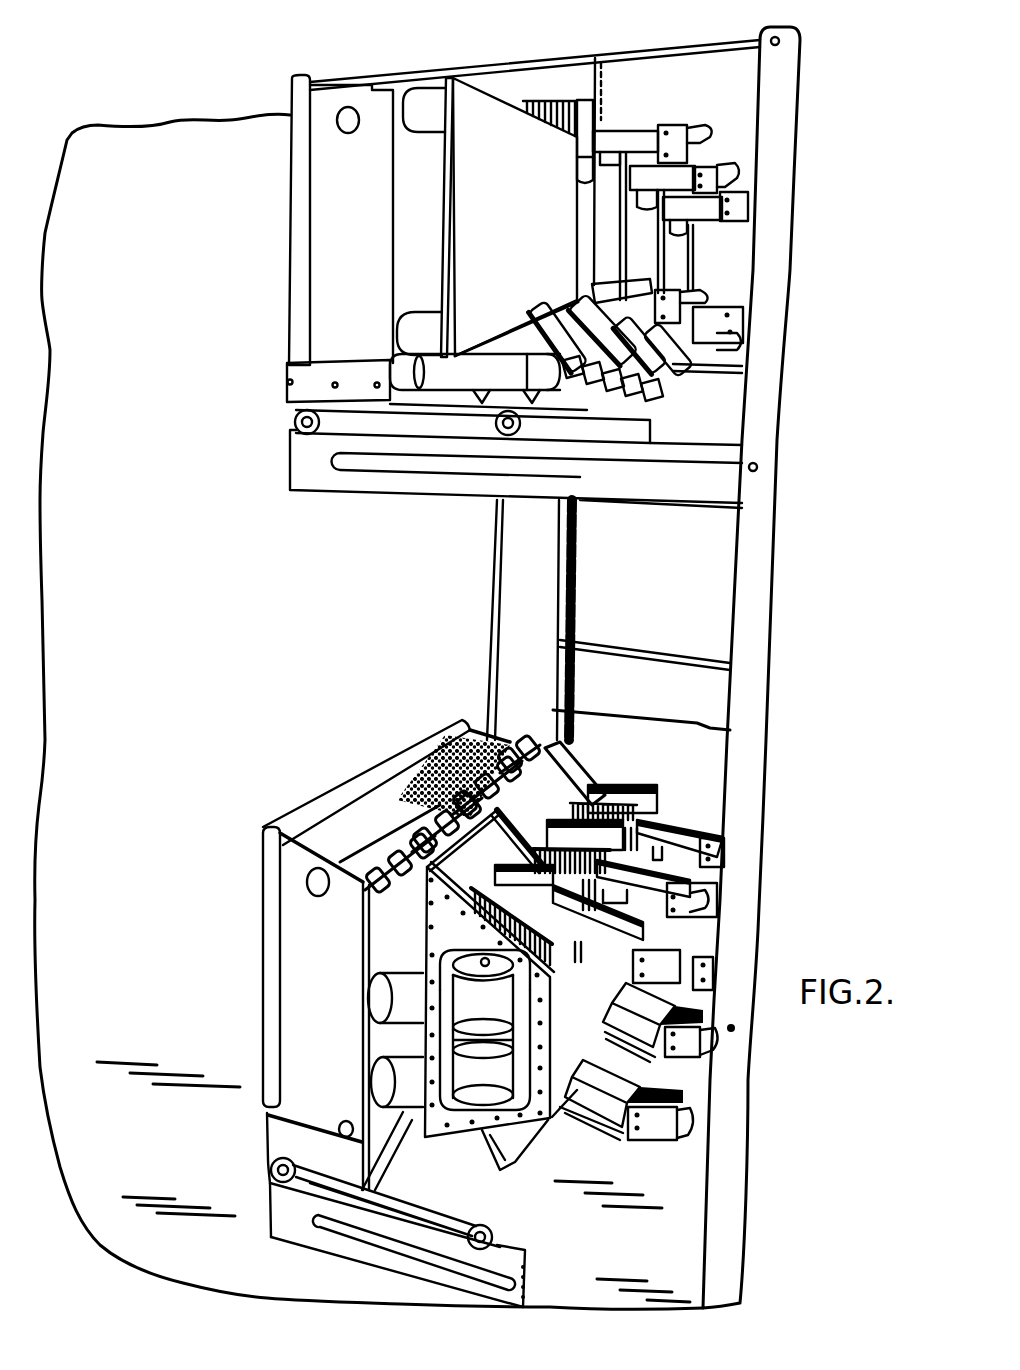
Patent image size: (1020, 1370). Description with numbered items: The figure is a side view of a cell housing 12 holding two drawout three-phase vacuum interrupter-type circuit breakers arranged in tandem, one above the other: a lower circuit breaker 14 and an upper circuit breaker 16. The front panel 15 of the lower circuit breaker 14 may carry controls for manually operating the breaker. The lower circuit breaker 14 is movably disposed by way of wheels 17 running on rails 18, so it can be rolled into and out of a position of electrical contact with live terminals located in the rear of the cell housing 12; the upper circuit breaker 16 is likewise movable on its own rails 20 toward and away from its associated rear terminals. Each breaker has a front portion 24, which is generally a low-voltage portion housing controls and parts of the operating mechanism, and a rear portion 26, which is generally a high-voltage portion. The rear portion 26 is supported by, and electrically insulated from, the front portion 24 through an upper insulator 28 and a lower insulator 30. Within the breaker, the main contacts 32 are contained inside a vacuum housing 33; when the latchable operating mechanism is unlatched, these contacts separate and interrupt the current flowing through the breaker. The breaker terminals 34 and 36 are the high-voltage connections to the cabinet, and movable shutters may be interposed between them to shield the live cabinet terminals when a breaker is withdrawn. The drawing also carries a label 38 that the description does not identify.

The cell housing 12 is at (797, 117).
The lower circuit breaker 14 is at (331, 1044).
The front panel 15 is at (263, 948).
The upper circuit breaker 16 is at (358, 246).
The wheels 17 is at (268, 1176).
The rails 18 is at (333, 1258).
The rails 20 is at (650, 502).
The front portion 24 is at (329, 977).
The rear portion 26 is at (468, 939).
The upper insulator 28 is at (545, 740).
The lower insulator 30 is at (400, 1113).
The main contacts 32 is at (510, 1006).
The vacuum housing 33 is at (497, 1057).
The terminal 34 is at (675, 125).
The terminal 36 is at (700, 345).
The bracket 38 is at (507, 1160).